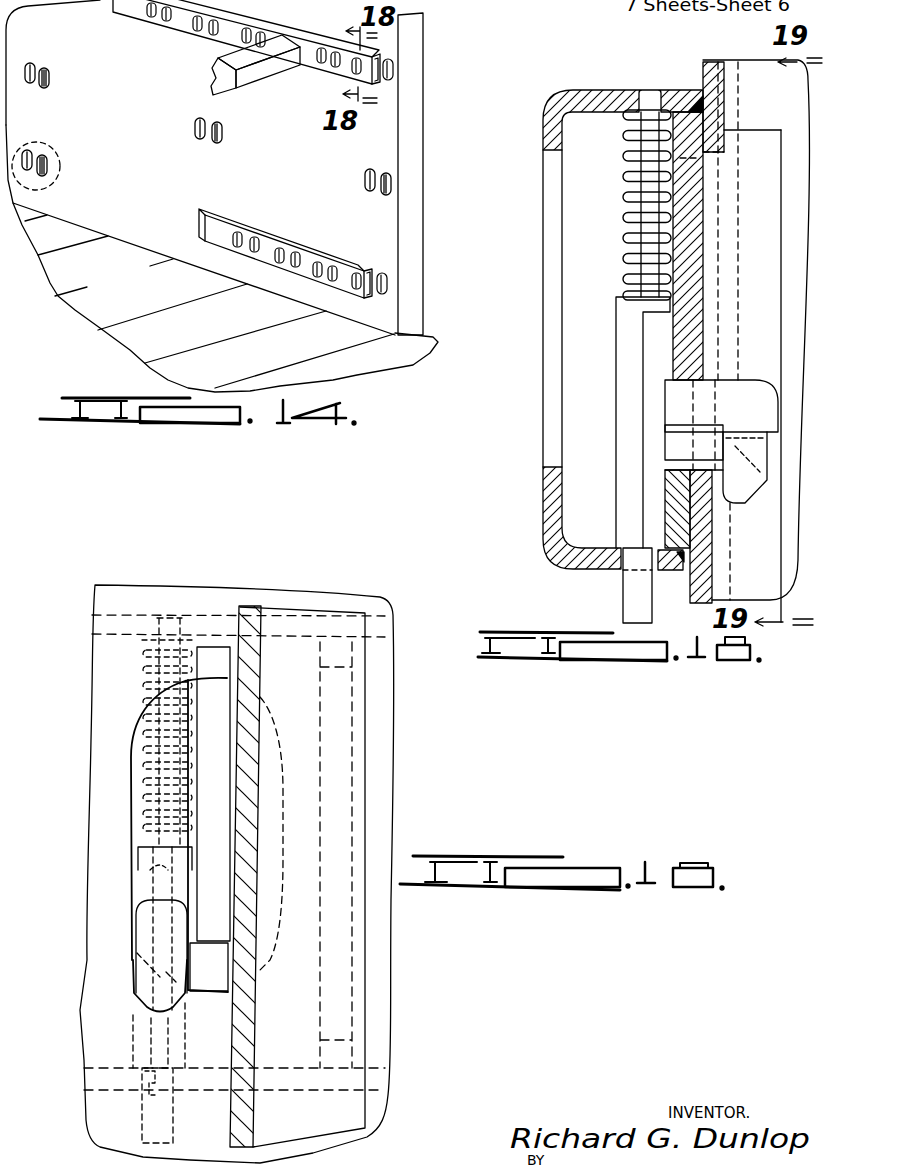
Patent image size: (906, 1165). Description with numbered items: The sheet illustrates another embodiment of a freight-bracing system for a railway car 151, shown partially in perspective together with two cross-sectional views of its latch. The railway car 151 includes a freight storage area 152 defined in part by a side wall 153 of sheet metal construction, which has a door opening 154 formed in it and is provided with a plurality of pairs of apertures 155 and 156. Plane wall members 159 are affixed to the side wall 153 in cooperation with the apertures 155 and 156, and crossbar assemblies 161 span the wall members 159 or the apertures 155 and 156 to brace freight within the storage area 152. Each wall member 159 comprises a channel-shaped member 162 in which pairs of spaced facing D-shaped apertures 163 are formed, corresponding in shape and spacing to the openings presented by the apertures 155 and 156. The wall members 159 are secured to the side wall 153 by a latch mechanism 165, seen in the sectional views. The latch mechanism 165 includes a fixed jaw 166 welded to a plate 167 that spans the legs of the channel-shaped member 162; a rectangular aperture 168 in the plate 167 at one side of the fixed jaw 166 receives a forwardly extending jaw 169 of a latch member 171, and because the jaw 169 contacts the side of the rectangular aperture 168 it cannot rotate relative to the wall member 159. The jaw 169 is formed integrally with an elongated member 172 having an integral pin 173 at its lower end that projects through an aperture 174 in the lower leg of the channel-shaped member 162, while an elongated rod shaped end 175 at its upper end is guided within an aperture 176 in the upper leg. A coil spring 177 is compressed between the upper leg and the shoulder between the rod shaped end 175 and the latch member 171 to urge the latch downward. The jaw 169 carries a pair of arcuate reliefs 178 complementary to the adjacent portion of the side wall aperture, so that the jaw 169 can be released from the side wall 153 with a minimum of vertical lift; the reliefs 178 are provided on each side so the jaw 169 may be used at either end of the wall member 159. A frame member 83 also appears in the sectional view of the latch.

In FIG. 18, the frame member 83 is at (363, 608).
In FIG. 14, the railway car 151 is at (444, 118).
In FIG. 14, the freight storage area 152 is at (148, 297).
In FIG. 14, the side wall 153 is at (115, 102).
In FIG. 14, the door opening 154 is at (485, 230).
In FIG. 14, the apertures 155 is at (34, 60).
In FIG. 14, the apertures 156 is at (52, 72).
In FIG. 18, the apertures 156 is at (135, 762).
In FIG. 14, the wall members 159 is at (177, 23).
In FIG. 19, the wall members 159 is at (534, 284).
In FIG. 14, the crossbar assemblies 161 is at (242, 89).
In FIG. 19, the channel-shaped member 162 is at (588, 92).
In FIG. 18, the channel-shaped member 162 is at (290, 623).
In FIG. 14, the D-shaped apertures 163 is at (247, 27).
In FIG. 14, the latch mechanism 165 is at (306, 10).
In FIG. 19, the latch mechanism 165 is at (825, 243).
In FIG. 19, the fixed jaw 166 is at (750, 130).
In FIG. 18, the fixed jaw 166 is at (220, 662).
In FIG. 19, the plate 167 is at (688, 117).
In FIG. 19, the rectangular aperture 168 is at (697, 334).
In FIG. 18, the rectangular aperture 168 is at (163, 860).
In FIG. 19, the jaw 169 is at (753, 372).
In FIG. 18, the jaw 169 is at (145, 932).
In FIG. 19, the latch member 171 is at (609, 395).
In FIG. 18, the elongated member 172 is at (173, 1043).
In FIG. 19, the pin 173 is at (630, 592).
In FIG. 18, the pin 173 is at (177, 1125).
In FIG. 19, the aperture 174 is at (623, 537).
In FIG. 18, the aperture 174 is at (145, 1097).
In FIG. 19, the rod shaped end 175 is at (648, 176).
In FIG. 18, the rod shaped end 175 is at (177, 613).
In FIG. 19, the aperture 176 is at (653, 92).
In FIG. 18, the aperture 176 is at (163, 618).
In FIG. 19, the coil spring 177 is at (630, 227).
In FIG. 18, the coil spring 177 is at (232, 680).
In FIG. 18, the arcuate reliefs 178 is at (140, 1010).